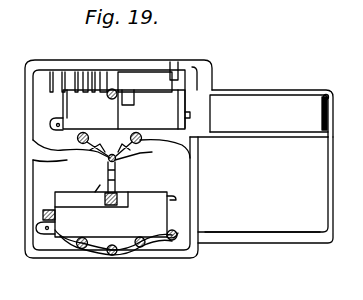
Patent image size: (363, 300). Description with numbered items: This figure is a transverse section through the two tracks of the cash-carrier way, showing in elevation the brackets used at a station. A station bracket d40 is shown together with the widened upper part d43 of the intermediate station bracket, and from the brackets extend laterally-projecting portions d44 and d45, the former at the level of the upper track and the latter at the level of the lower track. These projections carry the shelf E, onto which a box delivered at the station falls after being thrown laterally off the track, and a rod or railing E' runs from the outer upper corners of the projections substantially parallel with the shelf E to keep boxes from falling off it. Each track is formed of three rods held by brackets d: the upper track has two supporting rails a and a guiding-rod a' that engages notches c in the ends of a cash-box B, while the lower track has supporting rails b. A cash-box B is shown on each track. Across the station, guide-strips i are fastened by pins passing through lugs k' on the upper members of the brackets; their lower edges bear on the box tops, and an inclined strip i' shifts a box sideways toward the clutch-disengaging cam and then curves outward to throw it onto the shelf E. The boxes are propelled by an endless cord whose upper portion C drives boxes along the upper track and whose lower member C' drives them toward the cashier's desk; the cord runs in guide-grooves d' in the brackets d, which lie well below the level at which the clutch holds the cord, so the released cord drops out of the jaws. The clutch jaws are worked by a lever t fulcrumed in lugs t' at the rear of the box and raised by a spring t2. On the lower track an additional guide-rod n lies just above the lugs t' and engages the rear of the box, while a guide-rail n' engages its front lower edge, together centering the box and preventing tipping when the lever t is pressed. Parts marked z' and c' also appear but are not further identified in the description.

The station bracket d40 is at (28, 143).
The widened upper part of intermediate station bracket d43 is at (213, 72).
The laterally-projecting portion of station bracket d44 is at (284, 136).
The laterally-projecting portion of intermediate bracket d45 is at (270, 236).
The shelf E is at (272, 190).
The rod or railing E' is at (303, 113).
The lugs on upper members of brackets k' is at (105, 67).
The guide-strips i is at (81, 67).
The inclined guide strip i' is at (145, 82).
The cash-box B is at (120, 163).
The notches c is at (138, 158).
The supporting rails of return-track a is at (91, 128).
The clutch-operating lever t is at (177, 113).
The lugs t' is at (51, 167).
The brackets d is at (71, 151).
The propelling-cord upper portion C is at (134, 157).
The guiding-rod of return-track a' is at (83, 174).
The rod z' is at (89, 185).
The guide-grooves d' is at (113, 257).
The supporting rails of forwarding-track b is at (81, 250).
The propelling-cord lower member C' is at (142, 256).
The groove c' is at (91, 199).
The additional guide-rod n is at (46, 206).
The guide-rail n' is at (189, 224).
The spring t2 is at (176, 197).